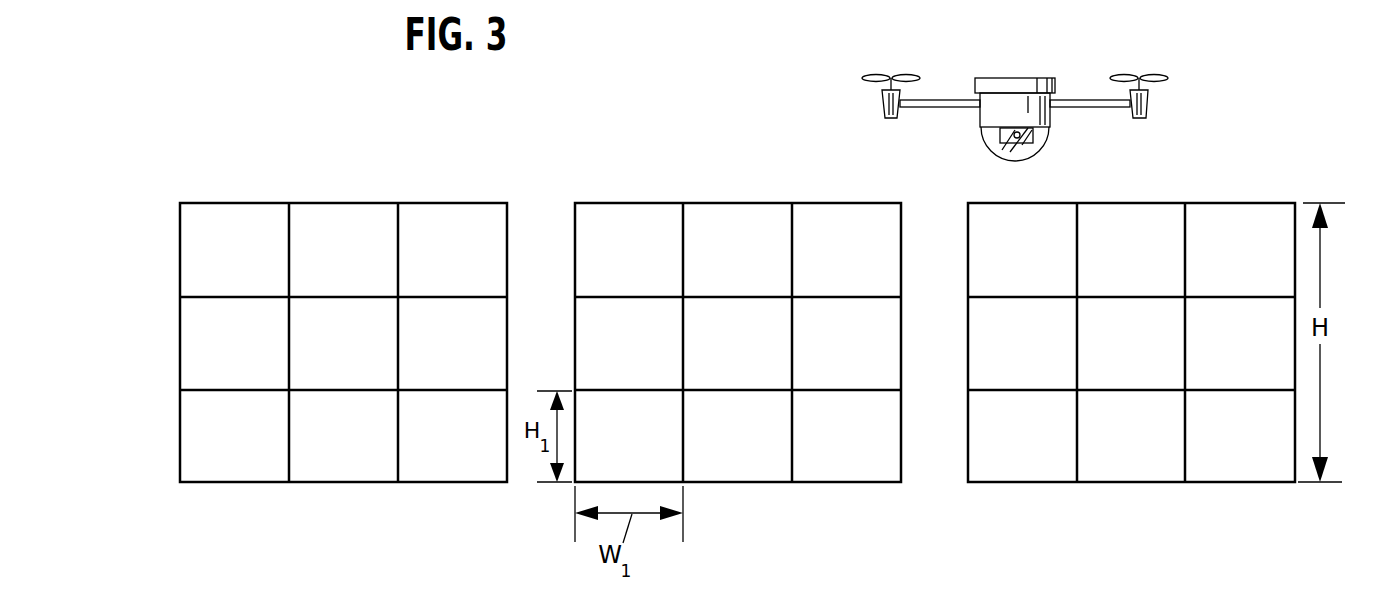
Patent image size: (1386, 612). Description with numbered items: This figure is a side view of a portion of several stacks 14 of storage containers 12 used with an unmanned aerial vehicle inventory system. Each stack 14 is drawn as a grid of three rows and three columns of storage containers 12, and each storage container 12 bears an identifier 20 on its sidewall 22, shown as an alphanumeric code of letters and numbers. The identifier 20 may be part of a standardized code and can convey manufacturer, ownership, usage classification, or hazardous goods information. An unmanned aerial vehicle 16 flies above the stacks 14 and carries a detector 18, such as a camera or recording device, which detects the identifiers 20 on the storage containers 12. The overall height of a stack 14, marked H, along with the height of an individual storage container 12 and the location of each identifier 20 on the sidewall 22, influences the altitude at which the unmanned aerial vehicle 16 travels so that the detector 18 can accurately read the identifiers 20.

The storage container 12 is at (227, 291).
The stack 14 is at (411, 152).
The unmanned aerial vehicle 16 is at (1027, 82).
The detector 18 is at (1000, 135).
The identifier 20 is at (252, 232).
The sidewall 22 is at (490, 257).